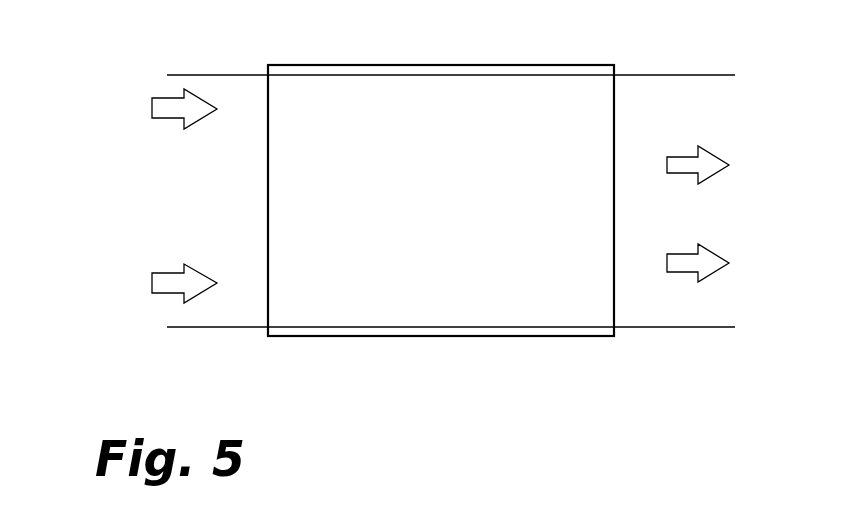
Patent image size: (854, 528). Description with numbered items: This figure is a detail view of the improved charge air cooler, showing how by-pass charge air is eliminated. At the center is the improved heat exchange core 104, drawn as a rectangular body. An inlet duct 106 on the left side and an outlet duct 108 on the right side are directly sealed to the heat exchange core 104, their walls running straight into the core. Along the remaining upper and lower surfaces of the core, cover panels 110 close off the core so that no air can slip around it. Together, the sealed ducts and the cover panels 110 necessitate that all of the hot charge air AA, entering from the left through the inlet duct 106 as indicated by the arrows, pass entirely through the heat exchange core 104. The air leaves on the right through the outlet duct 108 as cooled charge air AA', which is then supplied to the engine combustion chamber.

The heat exchange core 104 is at (350, 346).
The inlet duct 106 is at (198, 75).
The outlet duct 108 is at (673, 75).
The cover panels 110 is at (448, 65).
The hot charge air AA is at (157, 196).
The cooled charge air AA' is at (706, 214).